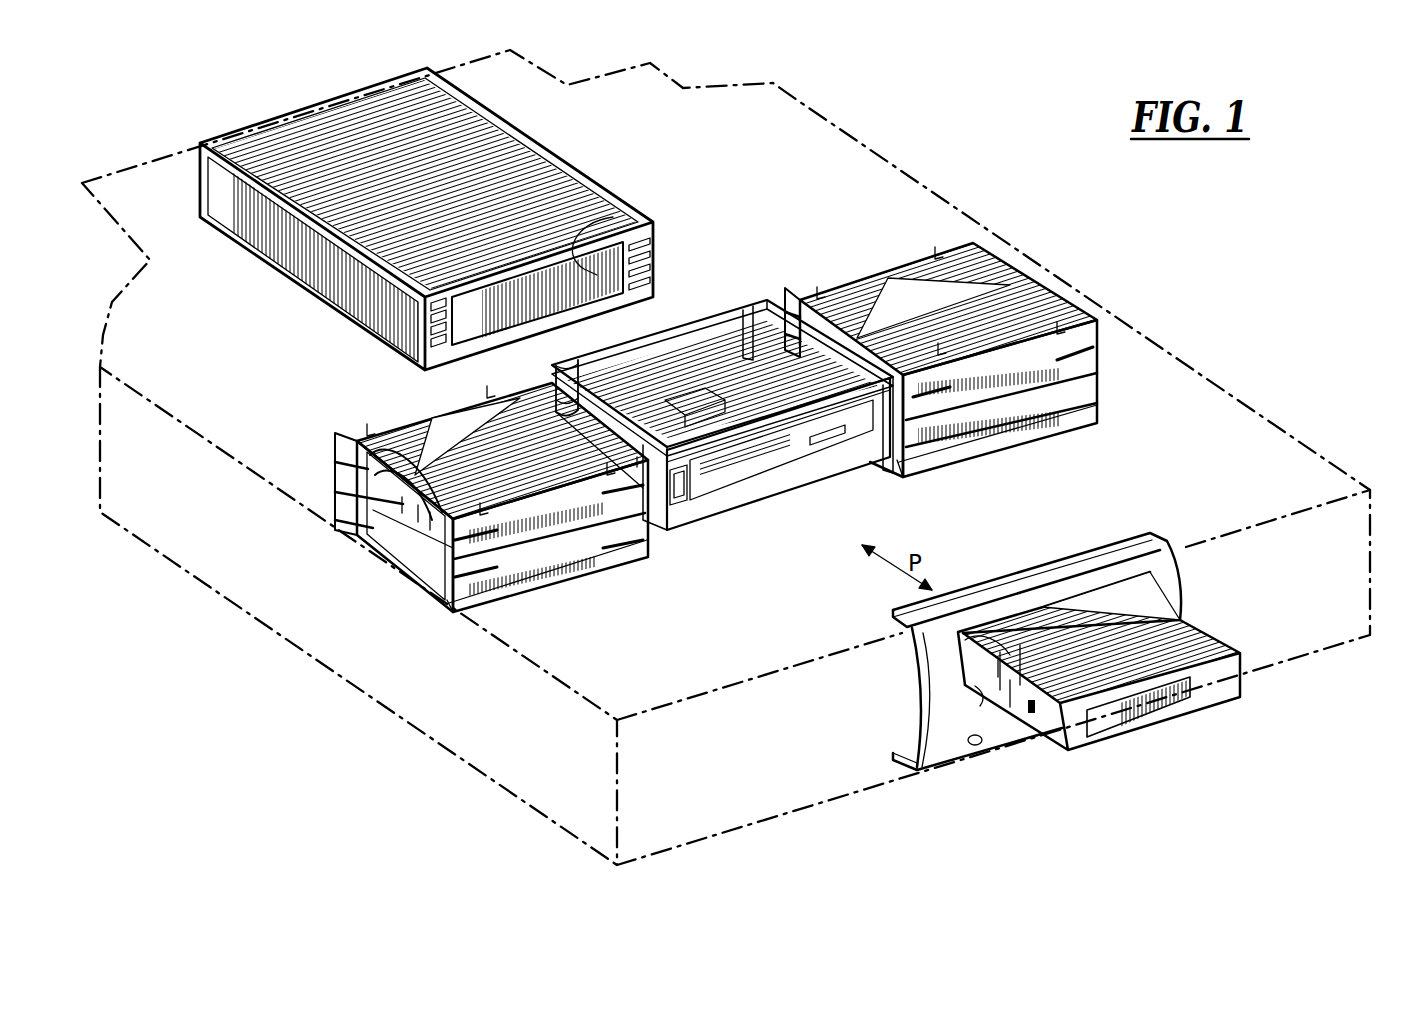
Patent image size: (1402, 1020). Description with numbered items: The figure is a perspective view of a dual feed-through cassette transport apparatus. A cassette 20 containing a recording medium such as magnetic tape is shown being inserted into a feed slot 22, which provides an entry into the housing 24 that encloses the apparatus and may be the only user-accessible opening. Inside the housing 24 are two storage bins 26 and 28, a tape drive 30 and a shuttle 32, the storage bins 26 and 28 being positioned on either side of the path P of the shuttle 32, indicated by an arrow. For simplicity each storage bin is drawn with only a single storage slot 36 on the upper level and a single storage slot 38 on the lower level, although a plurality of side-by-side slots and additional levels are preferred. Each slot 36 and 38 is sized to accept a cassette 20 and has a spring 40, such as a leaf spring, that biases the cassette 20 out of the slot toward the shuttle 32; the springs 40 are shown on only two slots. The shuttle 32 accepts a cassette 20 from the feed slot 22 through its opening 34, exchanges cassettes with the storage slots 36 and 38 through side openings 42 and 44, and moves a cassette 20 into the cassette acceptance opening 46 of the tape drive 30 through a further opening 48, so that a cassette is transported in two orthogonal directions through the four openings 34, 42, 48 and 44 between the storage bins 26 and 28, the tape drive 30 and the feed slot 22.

The cassette 20 is at (1210, 698).
The feed slot 22 is at (1166, 584).
The housing 24 is at (425, 735).
The storage bin 26 is at (560, 567).
The storage bin 28 is at (972, 440).
The tape drive 30 is at (306, 262).
The shuttle 32 is at (722, 508).
The opening 34 is at (812, 452).
The storage slot 36 is at (340, 447).
The storage slot 38 is at (448, 597).
The spring 40 is at (380, 492).
The side opening 42 is at (560, 382).
The side opening 44 is at (773, 322).
The cassette acceptance opening 46 is at (640, 218).
The opening 48 is at (685, 343).